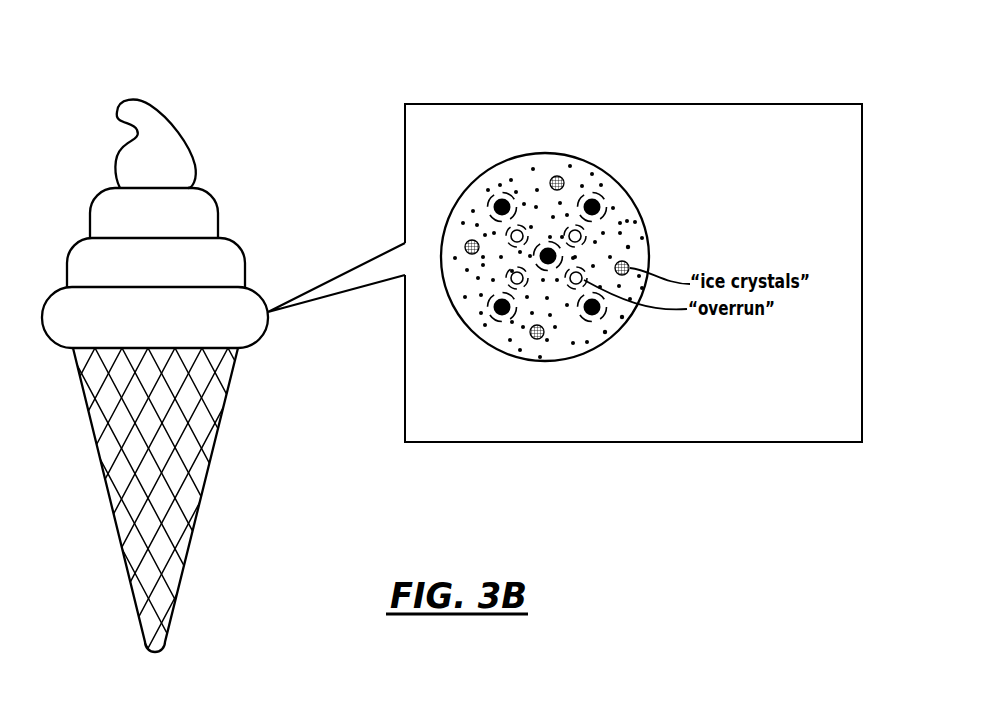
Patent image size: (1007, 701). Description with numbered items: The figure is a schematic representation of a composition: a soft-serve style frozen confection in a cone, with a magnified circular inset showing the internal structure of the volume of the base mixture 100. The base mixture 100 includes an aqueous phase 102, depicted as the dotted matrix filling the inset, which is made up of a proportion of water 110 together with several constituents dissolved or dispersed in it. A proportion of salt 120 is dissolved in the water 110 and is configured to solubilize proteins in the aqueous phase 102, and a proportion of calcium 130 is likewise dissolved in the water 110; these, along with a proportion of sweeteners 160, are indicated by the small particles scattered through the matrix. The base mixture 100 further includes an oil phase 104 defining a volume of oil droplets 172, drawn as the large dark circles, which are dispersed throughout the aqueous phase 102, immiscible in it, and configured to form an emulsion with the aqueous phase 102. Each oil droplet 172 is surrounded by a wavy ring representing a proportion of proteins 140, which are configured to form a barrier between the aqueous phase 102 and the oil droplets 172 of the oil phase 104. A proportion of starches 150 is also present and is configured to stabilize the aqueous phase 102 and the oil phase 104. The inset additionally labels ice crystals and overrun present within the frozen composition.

The base mixture 100 is at (862, 60).
The aqueous phase 102 is at (615, 261).
The oil phase 104 is at (636, 224).
The water 110 is at (628, 247).
The salt 120 is at (691, 342).
The calcium 130 is at (691, 342).
The proteins 140 is at (633, 298).
The starches 150 is at (615, 202).
The sweeteners 160 is at (622, 317).
The oil droplets 172 is at (593, 196).